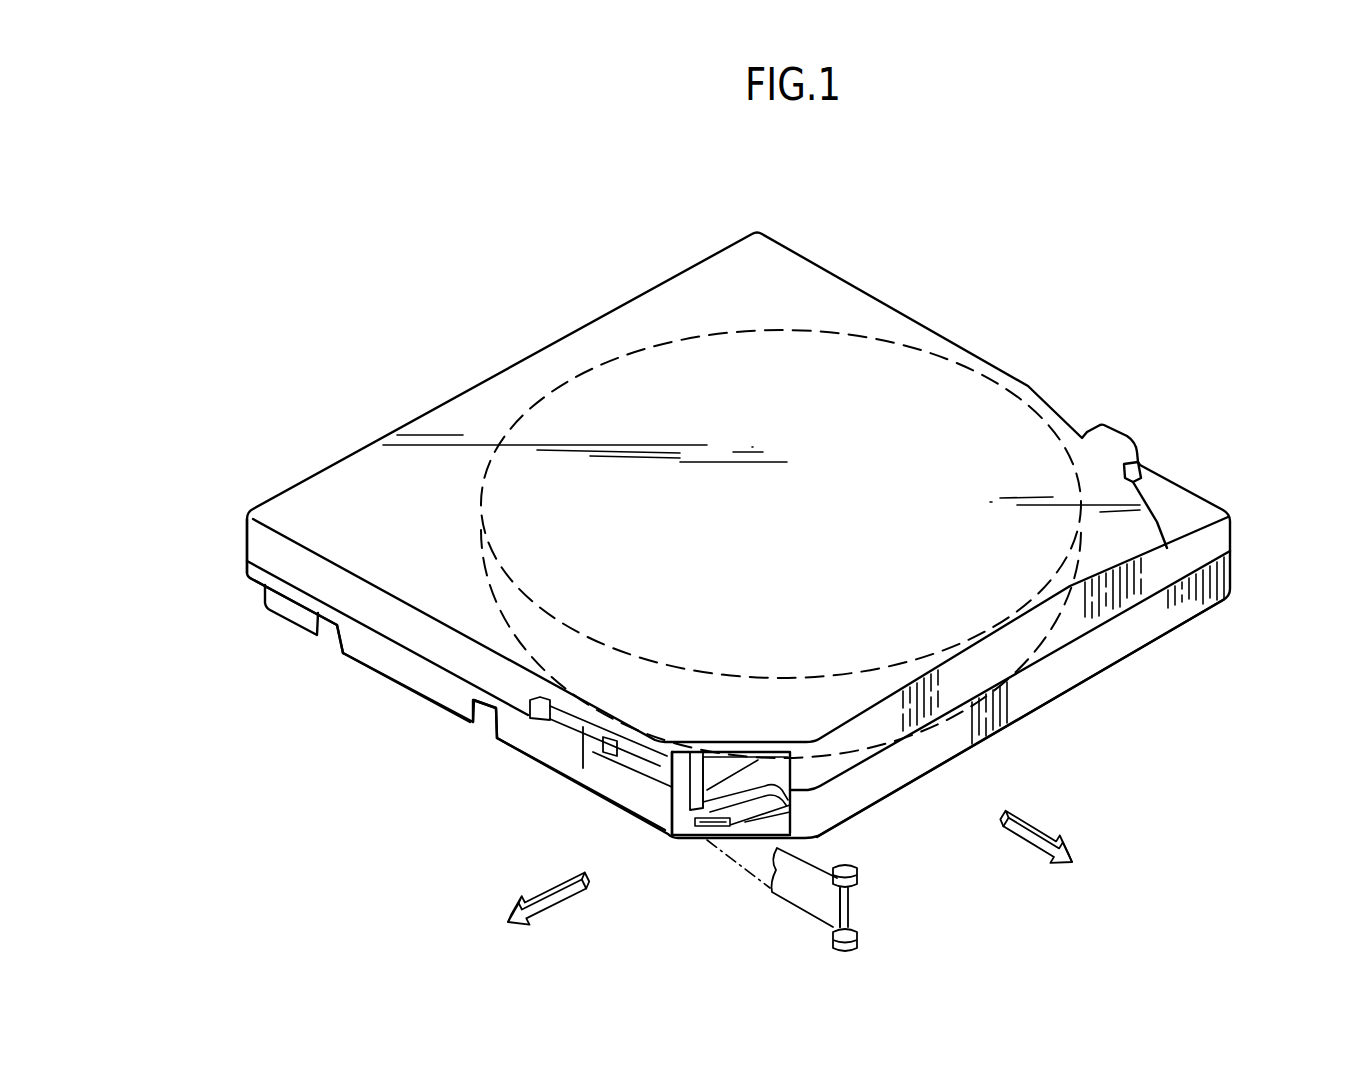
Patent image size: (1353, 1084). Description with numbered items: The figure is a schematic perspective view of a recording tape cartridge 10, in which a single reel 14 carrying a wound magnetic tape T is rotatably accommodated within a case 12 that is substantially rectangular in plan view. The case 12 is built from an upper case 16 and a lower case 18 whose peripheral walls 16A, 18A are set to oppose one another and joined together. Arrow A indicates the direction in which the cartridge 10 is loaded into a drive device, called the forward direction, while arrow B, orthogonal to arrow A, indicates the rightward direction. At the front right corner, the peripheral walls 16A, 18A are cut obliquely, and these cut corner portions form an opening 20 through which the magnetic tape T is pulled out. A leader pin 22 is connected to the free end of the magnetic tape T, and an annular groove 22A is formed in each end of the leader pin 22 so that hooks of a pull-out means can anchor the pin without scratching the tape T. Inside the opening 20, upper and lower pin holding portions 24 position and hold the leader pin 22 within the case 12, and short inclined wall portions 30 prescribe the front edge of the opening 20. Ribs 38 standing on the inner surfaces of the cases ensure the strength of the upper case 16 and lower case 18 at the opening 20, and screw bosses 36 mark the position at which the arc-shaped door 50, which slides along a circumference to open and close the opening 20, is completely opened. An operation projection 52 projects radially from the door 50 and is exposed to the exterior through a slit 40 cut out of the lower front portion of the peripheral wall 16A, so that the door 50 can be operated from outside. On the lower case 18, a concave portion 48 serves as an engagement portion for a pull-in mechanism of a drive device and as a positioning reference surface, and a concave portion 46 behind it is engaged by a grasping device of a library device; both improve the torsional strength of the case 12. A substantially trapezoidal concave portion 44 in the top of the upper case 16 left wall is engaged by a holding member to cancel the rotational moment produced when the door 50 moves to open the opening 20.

The recording tape cartridge 10 is at (1043, 204).
The case 12 is at (782, 290).
The reel 14 is at (621, 368).
The upper case 16 is at (1088, 612).
The peripheral wall of upper case 16A is at (258, 530).
The lower case 18 is at (1065, 678).
The peripheral wall of lower case 18A is at (388, 665).
The opening 20 is at (682, 833).
The leader pin 22 is at (861, 861).
The annular groove 22A is at (857, 890).
The pin holding portion 24 is at (784, 783).
The inclined wall portion 30 is at (817, 824).
The screw boss 36 is at (661, 833).
The rib 38 is at (694, 834).
The slit 40 is at (596, 750).
The concave portion 44 is at (1068, 418).
The concave portion 46 is at (338, 630).
The concave portion 48 is at (483, 715).
The door 50 is at (586, 730).
The operation projection 52 is at (545, 722).
The magnetic tape T is at (807, 898).
The arrow A is at (1068, 848).
The arrow B is at (548, 911).